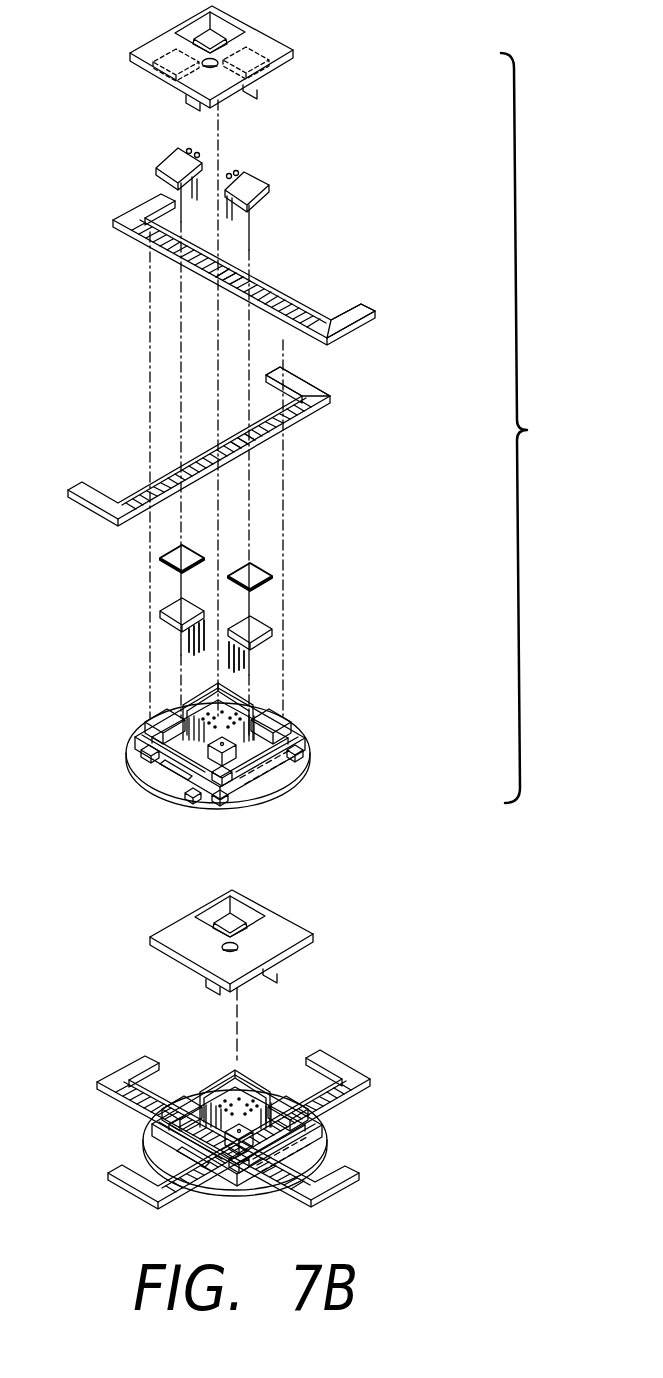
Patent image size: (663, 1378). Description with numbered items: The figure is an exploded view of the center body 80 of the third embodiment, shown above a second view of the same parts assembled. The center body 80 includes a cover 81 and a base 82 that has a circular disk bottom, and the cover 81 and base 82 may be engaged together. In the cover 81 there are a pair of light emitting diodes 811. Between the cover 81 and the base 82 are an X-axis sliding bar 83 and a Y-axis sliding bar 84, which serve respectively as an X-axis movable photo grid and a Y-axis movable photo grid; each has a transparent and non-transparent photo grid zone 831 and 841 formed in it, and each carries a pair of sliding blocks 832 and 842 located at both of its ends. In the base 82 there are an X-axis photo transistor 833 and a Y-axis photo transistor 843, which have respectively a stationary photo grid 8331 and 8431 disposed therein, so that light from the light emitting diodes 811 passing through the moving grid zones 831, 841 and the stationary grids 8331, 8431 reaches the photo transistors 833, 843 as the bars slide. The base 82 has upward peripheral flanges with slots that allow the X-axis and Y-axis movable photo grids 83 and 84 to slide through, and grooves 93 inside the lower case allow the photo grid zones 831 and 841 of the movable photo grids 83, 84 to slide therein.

The center body 80 is at (538, 428).
The cover 81 is at (257, 40).
The light emitting diodes 811 is at (172, 158).
The base 82 is at (295, 772).
The X-axis sliding bar 83 is at (306, 222).
The photo grid zone 831 is at (270, 290).
The sliding blocks 832 is at (366, 312).
The X-axis photo transistor 833 is at (270, 630).
The stationary photo grid 8331 is at (258, 574).
The Y-axis sliding bar 84 is at (120, 414).
The photo grid zone 841 is at (293, 427).
The sliding blocks 842 is at (323, 387).
The Y-axis photo transistor 843 is at (168, 610).
The stationary photo grid 8431 is at (165, 562).
The grooves 93 is at (158, 742).